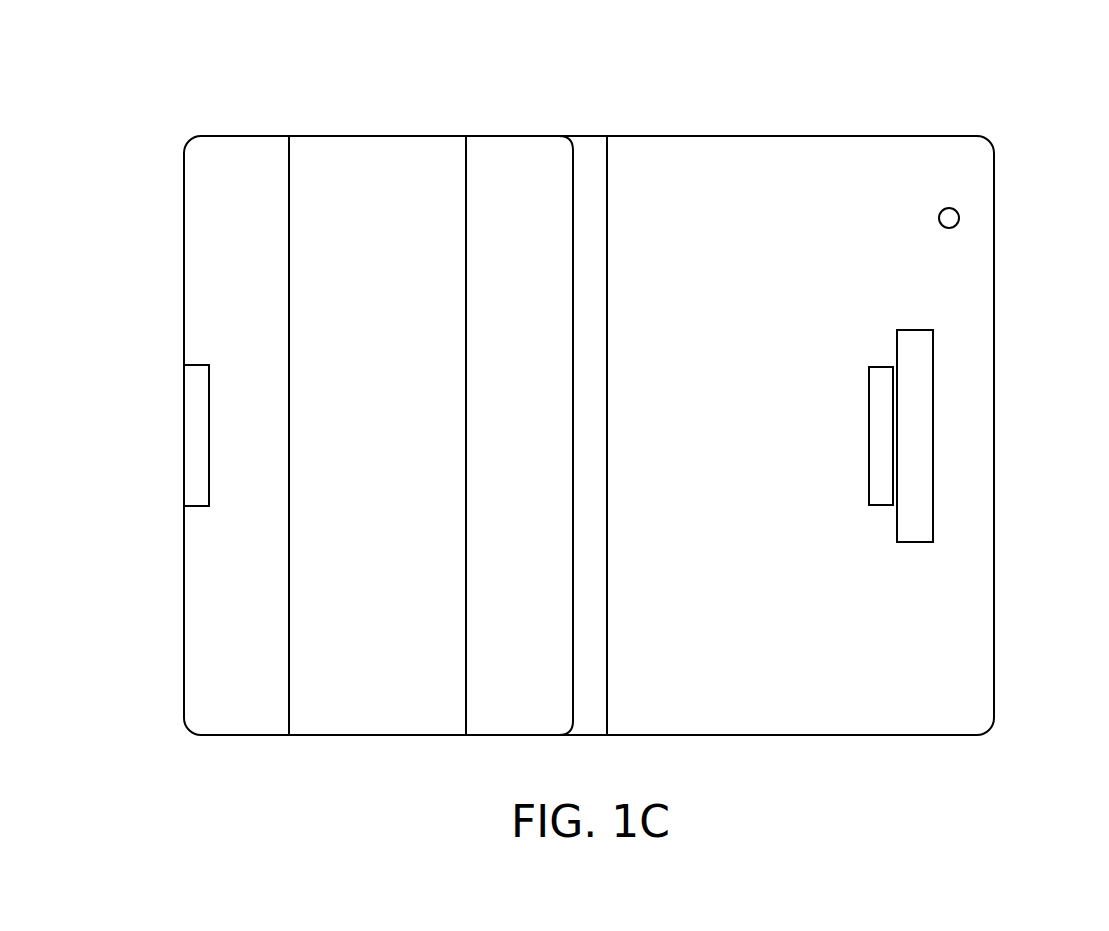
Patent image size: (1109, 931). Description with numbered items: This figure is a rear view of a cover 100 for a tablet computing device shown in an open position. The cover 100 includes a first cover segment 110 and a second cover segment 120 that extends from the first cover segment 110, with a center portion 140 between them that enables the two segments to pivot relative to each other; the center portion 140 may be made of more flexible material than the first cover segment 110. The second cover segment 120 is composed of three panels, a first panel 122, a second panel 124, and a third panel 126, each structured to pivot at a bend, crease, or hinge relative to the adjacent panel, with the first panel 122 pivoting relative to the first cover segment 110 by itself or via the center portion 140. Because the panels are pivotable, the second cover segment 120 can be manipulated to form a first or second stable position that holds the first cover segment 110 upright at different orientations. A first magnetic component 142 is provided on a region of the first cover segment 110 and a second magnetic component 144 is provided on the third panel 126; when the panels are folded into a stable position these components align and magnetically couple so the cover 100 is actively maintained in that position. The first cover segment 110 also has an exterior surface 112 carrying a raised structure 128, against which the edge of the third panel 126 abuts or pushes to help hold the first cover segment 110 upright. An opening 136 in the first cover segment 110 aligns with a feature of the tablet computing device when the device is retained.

The cover 100 is at (937, 84).
The first cover segment 110 is at (997, 433).
The exterior surface 112 is at (819, 703).
The second cover segment 120 is at (182, 620).
The first panel 122 is at (534, 170).
The second panel 124 is at (384, 170).
The third panel 126 is at (218, 170).
The raised structure 128 is at (917, 491).
The opening 136 is at (961, 223).
The center portion 140 is at (585, 157).
The first magnetic component 142 is at (881, 398).
The second magnetic component 144 is at (201, 424).